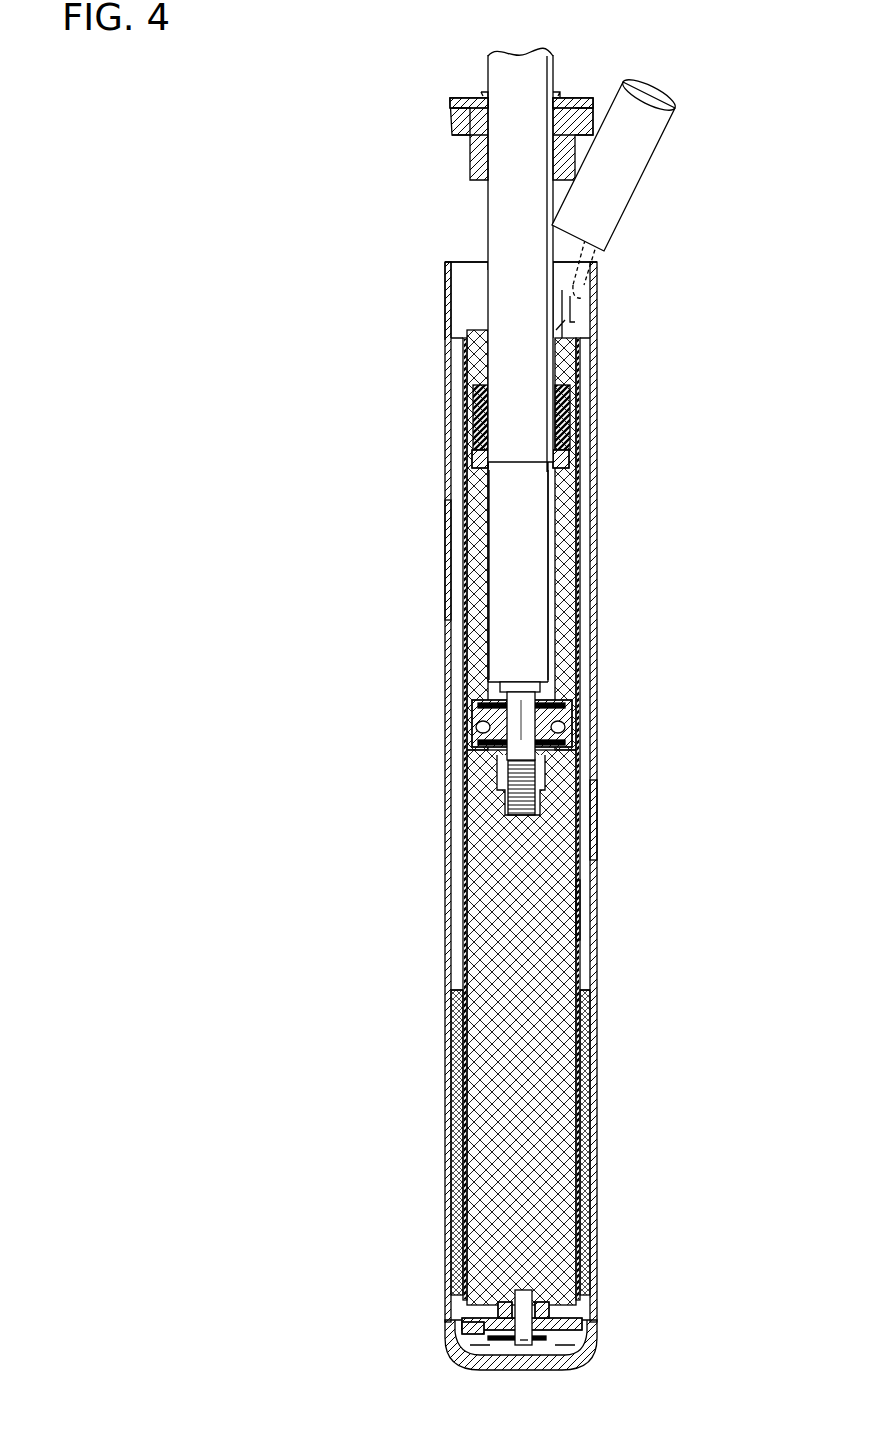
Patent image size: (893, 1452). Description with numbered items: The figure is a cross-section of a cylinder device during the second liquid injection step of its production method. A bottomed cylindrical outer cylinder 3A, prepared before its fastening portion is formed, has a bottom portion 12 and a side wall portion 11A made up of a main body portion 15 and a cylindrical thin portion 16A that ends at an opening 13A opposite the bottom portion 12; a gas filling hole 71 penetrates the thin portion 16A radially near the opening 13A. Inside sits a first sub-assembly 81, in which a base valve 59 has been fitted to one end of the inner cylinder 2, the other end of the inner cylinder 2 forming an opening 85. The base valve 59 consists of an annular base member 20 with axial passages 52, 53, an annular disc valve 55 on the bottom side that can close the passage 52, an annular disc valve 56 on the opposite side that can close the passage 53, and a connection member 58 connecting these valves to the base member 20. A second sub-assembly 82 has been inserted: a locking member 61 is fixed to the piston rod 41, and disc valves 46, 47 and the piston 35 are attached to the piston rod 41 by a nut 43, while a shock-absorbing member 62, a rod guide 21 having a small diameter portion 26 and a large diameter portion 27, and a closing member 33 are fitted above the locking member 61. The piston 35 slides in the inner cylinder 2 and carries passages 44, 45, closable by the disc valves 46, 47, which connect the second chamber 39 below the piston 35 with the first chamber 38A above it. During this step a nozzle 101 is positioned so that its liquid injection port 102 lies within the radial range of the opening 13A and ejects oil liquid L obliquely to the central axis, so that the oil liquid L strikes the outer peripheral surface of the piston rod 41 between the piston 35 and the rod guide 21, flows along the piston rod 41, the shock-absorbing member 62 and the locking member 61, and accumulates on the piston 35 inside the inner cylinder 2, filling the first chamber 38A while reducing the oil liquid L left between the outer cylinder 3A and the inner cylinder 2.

The inner cylinder 2 is at (576, 486).
The outer cylinder 3A is at (598, 535).
The side wall portion 11A is at (597, 836).
The bottom portion 12 is at (580, 1360).
The opening 13A is at (455, 262).
The main body portion 15 is at (450, 558).
The thin portion 16A is at (451, 300).
The base member 20 is at (578, 1325).
The rod guide 21 is at (468, 153).
The small diameter portion 26 is at (470, 178).
The large diameter portion 27 is at (456, 118).
The closing member 33 is at (458, 98).
The piston 35 is at (578, 722).
The first chamber 38A is at (478, 618).
The second chamber 39 is at (565, 1003).
The piston rod 41 is at (506, 520).
The nut 43 is at (494, 782).
The passage 44 is at (565, 736).
The passage 45 is at (478, 716).
The disc valve 46 is at (562, 688).
The disc valve 47 is at (486, 764).
The passage 52 is at (462, 1322).
The passage 53 is at (546, 1345).
The disc valve 55 is at (492, 1346).
The disc valve 56 is at (560, 1305).
The connection member 58 is at (514, 1300).
The base valve 59 is at (522, 1292).
The locking member 61 is at (472, 462).
The shock-absorbing member 62 is at (478, 402).
The gas filling hole 71 is at (597, 276).
The first sub-assembly 81 is at (583, 912).
The second sub-assembly 82 is at (486, 216).
The opening 85 is at (464, 320).
The nozzle 101 is at (633, 158).
The liquid injection port 102 is at (584, 294).
The oil liquid L is at (487, 916).